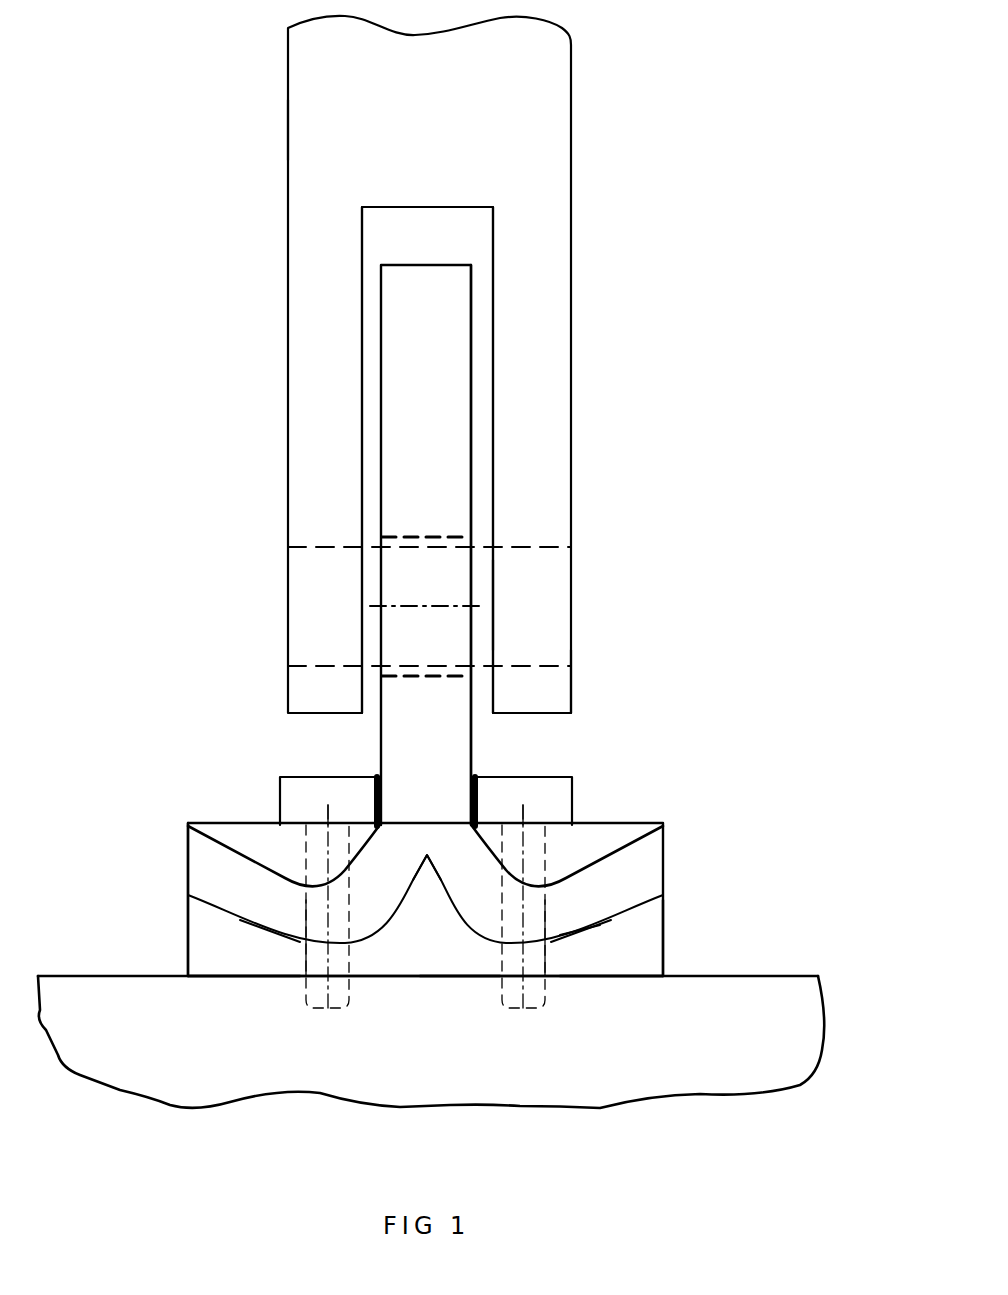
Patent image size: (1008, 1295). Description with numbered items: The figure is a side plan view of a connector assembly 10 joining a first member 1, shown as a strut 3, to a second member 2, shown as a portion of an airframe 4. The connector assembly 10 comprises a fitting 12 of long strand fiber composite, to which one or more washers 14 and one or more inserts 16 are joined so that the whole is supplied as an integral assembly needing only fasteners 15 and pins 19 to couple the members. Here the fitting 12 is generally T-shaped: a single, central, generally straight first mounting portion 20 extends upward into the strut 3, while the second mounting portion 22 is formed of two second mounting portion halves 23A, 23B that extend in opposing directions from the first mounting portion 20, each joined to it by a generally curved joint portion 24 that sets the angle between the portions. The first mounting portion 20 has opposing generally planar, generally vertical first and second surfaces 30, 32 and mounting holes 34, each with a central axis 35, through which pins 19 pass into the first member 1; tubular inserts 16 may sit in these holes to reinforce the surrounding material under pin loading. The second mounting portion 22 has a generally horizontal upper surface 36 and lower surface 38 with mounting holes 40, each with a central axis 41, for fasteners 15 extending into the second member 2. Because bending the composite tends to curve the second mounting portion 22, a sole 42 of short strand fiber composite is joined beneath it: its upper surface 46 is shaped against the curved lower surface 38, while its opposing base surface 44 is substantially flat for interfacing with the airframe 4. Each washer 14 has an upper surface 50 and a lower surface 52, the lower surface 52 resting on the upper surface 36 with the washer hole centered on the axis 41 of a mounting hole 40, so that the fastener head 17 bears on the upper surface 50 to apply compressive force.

The first member 1 is at (272, 130).
The second member 2 is at (81, 932).
The strut 3 is at (548, 162).
The airframe 4 is at (790, 1023).
The connector assembly 10 is at (677, 677).
The fitting 12 is at (490, 438).
The washer 14 is at (228, 812).
The fastener 15 is at (278, 768).
The insert 16 is at (398, 531).
The fastener head 17 is at (348, 787).
The pin 19 is at (560, 602).
The first mounting portion 20 is at (384, 407).
The second mounting portion 22 is at (668, 877).
The second mounting portion half 23A is at (201, 862).
The second mounting portion half 23B is at (648, 853).
The joint portion 24 is at (410, 895).
The first surface 30 is at (381, 330).
The second surface 32 is at (493, 350).
The mounting hole 34 is at (475, 565).
The central axis 35 is at (455, 606).
The upper surface 36 is at (246, 848).
The lower surface 38 is at (244, 935).
The mounting hole 40 is at (303, 912).
The central axis 41 is at (328, 955).
The sole 42 is at (661, 959).
The base surface 44 is at (460, 975).
The upper surface 46 is at (581, 950).
The upper surface 50 is at (249, 820).
The lower surface 52 is at (268, 867).